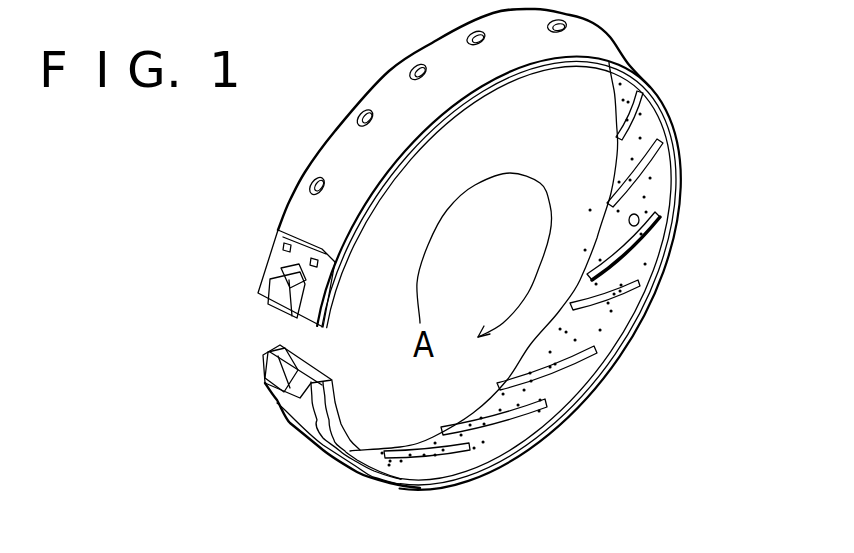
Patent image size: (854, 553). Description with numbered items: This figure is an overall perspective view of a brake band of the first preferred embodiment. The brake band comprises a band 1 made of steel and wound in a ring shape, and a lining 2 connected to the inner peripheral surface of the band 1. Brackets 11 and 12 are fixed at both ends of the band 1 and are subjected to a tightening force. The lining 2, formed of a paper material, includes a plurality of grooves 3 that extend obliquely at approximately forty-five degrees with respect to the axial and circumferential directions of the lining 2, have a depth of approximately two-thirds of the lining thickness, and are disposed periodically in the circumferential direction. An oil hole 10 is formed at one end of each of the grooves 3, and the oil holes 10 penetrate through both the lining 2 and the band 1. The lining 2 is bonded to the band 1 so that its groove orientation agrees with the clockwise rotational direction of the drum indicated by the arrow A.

The band 1 is at (397, 94).
The lining 2 is at (657, 198).
The grooves 3 is at (606, 371).
The oil hole 10 is at (562, 21).
The bracket 11 is at (263, 293).
The bracket 12 is at (268, 377).